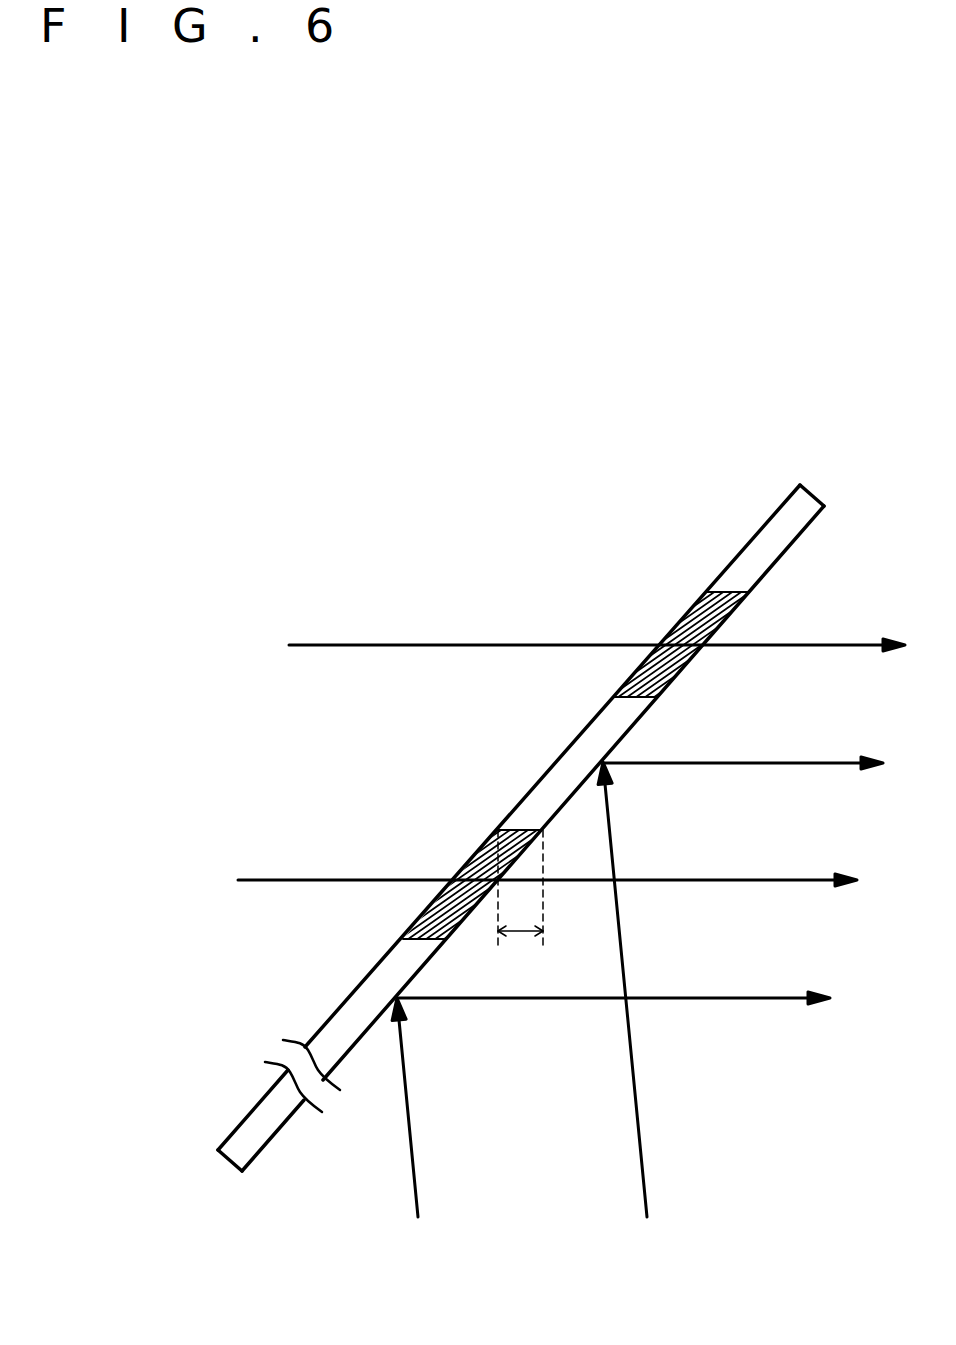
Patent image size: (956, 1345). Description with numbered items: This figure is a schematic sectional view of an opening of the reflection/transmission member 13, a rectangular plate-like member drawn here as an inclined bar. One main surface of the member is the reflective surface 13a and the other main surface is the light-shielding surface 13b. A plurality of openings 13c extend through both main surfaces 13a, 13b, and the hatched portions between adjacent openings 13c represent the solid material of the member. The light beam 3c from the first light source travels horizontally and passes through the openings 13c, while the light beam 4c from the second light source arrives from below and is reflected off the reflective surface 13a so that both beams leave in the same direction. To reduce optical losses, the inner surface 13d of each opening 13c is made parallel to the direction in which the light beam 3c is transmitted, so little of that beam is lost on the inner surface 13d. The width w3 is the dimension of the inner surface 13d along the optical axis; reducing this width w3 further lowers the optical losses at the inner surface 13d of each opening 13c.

The reflection/transmission member 13 is at (545, 808).
The reflective surface 13a is at (633, 726).
The light-shielding surface 13b is at (574, 743).
The opening 13c is at (733, 617).
The inner surface 13d is at (695, 603).
The light beam 3c is at (397, 645).
The light beam 4c is at (412, 1148).
The width w3 is at (523, 930).